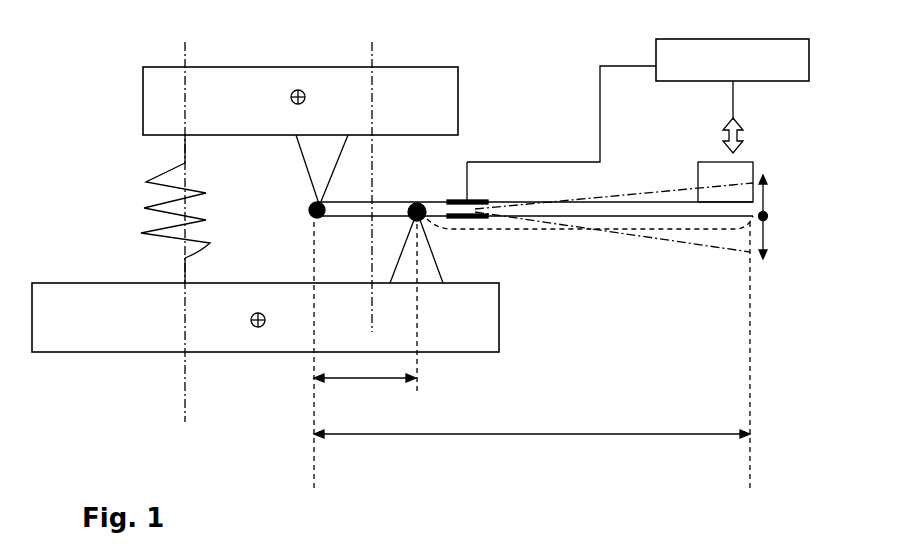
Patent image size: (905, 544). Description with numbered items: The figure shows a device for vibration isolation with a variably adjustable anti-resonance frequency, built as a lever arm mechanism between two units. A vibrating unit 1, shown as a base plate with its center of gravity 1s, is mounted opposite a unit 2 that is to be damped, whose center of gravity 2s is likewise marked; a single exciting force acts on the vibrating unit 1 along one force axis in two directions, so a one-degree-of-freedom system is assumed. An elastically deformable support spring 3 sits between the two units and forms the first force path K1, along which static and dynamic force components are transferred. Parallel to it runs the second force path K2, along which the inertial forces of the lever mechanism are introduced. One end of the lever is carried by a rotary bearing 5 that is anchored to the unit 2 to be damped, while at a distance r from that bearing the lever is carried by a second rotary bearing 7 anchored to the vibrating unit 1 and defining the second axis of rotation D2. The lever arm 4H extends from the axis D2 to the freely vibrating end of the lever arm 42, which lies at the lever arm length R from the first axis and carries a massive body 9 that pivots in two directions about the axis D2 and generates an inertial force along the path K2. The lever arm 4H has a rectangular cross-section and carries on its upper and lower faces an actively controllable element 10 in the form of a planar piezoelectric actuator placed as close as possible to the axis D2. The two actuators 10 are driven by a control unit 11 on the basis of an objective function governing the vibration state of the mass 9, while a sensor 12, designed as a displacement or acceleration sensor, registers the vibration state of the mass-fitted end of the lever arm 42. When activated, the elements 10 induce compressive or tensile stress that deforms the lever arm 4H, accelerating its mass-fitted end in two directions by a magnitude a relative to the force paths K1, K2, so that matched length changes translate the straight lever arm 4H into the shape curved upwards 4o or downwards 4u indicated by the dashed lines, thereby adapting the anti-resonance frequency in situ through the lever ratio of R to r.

The vibrating unit 1 is at (84, 320).
The center of gravity of the vibrating unit 1s is at (240, 331).
The unit to be damped 2 is at (151, 108).
The center of gravity of the unit to be damped 2s is at (316, 147).
The support spring 3 is at (144, 202).
The rotary bearing 5 is at (310, 213).
The second rotary bearing 7 is at (409, 217).
The massive body 9 is at (698, 162).
The actively controllable element 10 is at (486, 202).
The control unit 11 is at (638, 100).
The sensor 12 is at (745, 135).
The end of the lever arm 42 is at (767, 218).
The lever arm shape curved upwards 4o is at (614, 191).
The lever arm shape curved downwards 4u is at (612, 250).
The lever arm 4H is at (590, 252).
The first force path K1 is at (187, 220).
The second force path K2 is at (374, 175).
The second axis of rotation D2 is at (413, 203).
The magnitude of acceleration a is at (780, 217).
The distance between the rotary bearings r is at (365, 393).
The lever arm length R is at (532, 451).